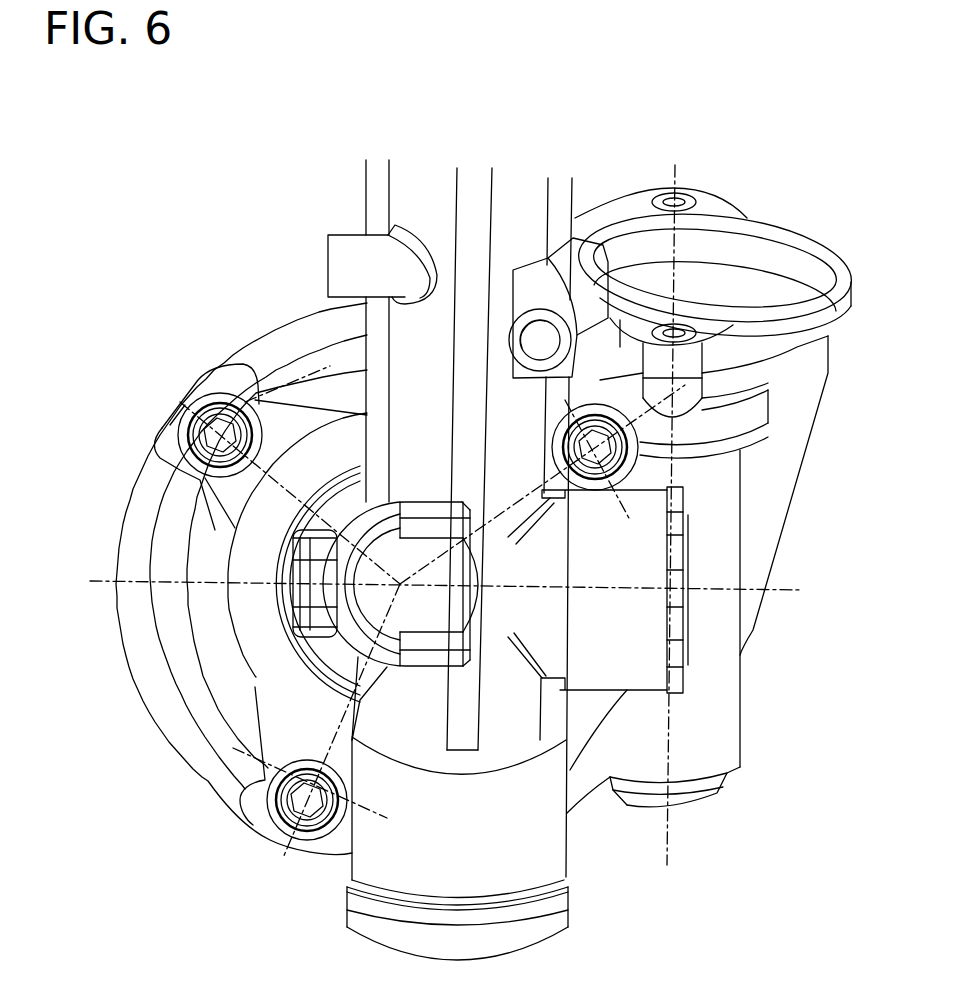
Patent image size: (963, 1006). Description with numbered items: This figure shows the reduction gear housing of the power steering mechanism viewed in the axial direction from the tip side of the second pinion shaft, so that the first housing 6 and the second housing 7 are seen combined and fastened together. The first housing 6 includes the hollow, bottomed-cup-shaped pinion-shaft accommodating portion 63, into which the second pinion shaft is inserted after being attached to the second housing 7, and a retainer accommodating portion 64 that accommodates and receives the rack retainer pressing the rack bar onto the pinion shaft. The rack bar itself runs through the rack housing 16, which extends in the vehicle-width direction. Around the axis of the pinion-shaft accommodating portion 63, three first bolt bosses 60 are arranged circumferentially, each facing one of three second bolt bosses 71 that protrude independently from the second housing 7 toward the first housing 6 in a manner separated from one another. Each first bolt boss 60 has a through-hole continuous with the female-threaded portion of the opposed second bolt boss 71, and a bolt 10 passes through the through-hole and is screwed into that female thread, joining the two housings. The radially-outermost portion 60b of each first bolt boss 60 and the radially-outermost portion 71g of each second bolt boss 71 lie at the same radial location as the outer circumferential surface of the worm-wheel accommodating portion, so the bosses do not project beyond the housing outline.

The first housing 6 is at (228, 625).
The second housing 7 is at (117, 607).
The bolt 10 is at (218, 427).
The rack housing 16 is at (407, 322).
The first bolt boss 60 is at (200, 483).
The radially-outermost portion 60b is at (188, 397).
The pinion-shaft accommodating portion 63 is at (335, 628).
The retainer accommodating portion 64 is at (647, 672).
The second bolt boss 71 is at (165, 458).
The radially-outermost portion 71g is at (190, 407).